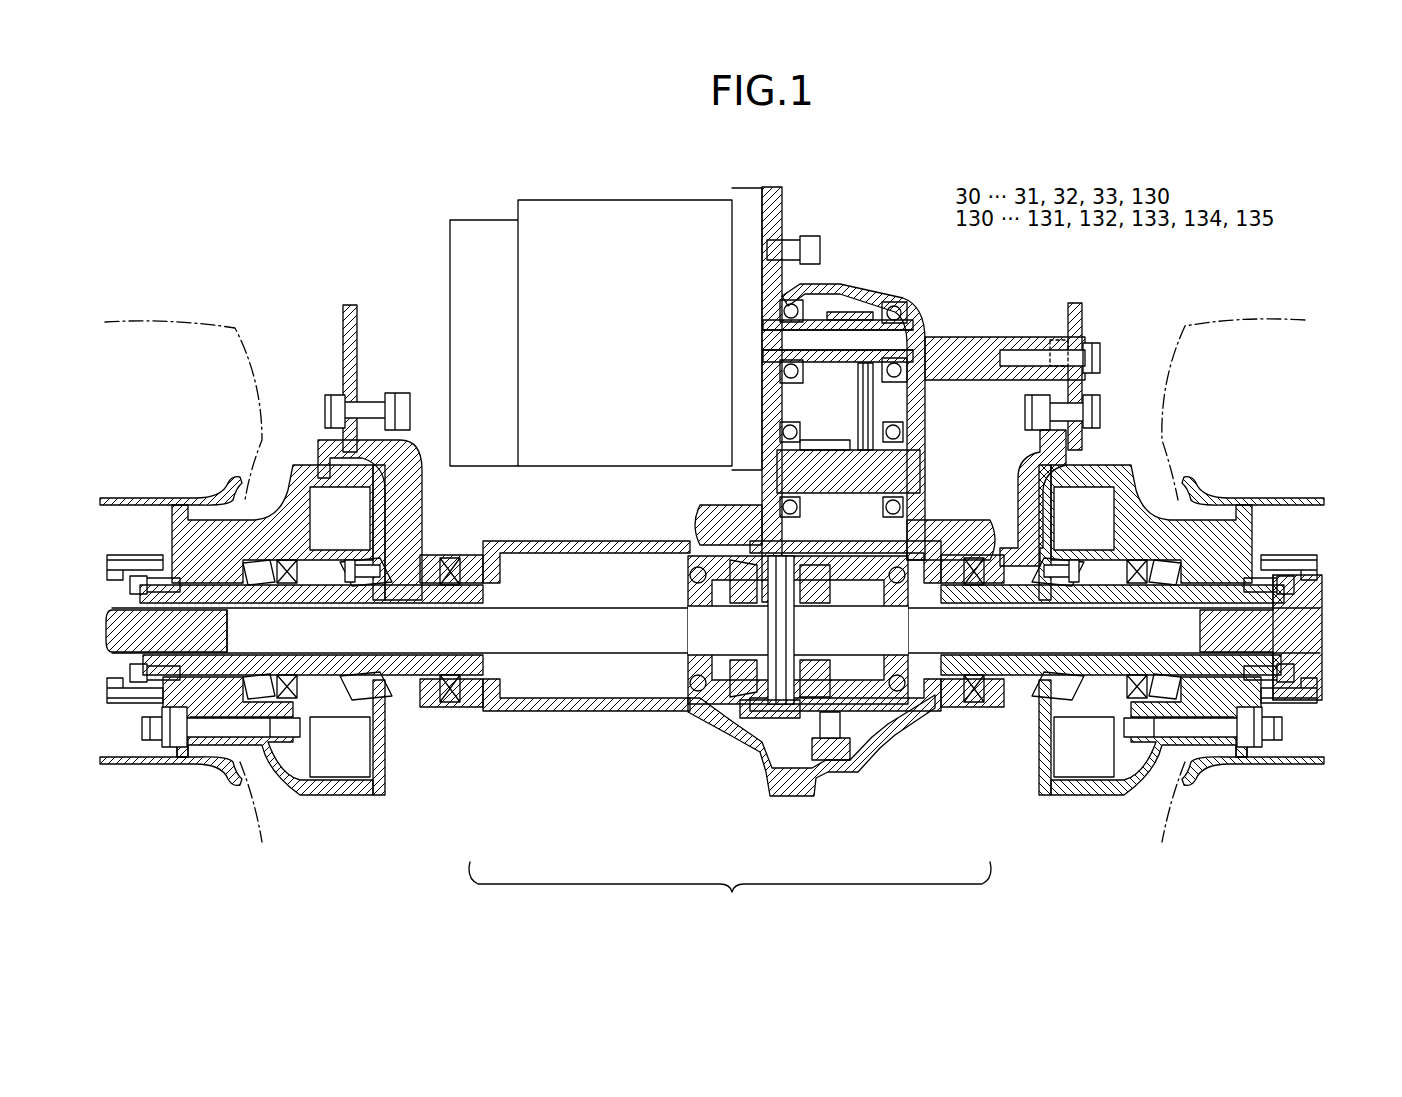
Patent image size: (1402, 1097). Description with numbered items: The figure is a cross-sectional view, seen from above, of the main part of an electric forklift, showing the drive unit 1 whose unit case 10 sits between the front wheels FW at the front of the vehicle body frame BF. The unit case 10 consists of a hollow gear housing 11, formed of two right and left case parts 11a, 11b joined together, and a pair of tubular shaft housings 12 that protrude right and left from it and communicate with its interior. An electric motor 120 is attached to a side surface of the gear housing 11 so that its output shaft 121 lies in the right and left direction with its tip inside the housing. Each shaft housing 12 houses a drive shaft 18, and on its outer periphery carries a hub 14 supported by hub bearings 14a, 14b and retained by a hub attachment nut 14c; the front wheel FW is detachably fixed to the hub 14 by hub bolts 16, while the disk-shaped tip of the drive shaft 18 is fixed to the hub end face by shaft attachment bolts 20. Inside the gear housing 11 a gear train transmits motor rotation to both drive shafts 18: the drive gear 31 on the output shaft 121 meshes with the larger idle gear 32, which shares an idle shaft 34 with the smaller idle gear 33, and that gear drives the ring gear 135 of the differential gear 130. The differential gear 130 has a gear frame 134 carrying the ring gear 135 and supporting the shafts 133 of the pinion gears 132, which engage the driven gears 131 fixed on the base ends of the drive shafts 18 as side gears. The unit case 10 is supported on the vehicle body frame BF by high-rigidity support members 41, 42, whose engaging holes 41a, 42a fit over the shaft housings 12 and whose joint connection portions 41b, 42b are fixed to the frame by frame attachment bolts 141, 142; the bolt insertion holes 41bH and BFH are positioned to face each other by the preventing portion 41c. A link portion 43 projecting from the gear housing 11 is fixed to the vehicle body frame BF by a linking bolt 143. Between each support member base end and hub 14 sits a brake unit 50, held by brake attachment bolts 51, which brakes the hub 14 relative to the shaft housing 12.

The drive unit 1 is at (868, 170).
The unit case 10 is at (730, 899).
The gear housing 11 is at (792, 821).
The case part 11a is at (808, 804).
The case part 11b is at (778, 796).
The shaft housing 12 is at (486, 740).
The hub 14 is at (252, 520).
The hub bearing 14a is at (258, 700).
The hub bearing 14b is at (165, 498).
The hub attachment nut 14c is at (160, 745).
The hub bolt 16 is at (213, 740).
The drive shaft 18 is at (442, 690).
The shaft attachment bolt 20 is at (125, 556).
The electric motor 120 is at (690, 215).
The output shaft 121 is at (832, 345).
The drive gear 31 is at (868, 340).
The idle gear 32 is at (857, 376).
The idle gear 33 is at (830, 440).
The idle shaft 34 is at (925, 472).
The support member 41 is at (1012, 488).
The engaging hole 41a is at (1018, 700).
The joint connection portion 41b is at (1080, 443).
The bolt insertion hole 41bH is at (1025, 410).
The preventing portion 41c is at (1058, 335).
The support member 42 is at (412, 485).
The engaging hole 42a is at (410, 740).
The joint connection portion 42b is at (330, 445).
The link portion 43 is at (953, 345).
The brake unit 50 is at (345, 778).
The brake attachment bolt 51 is at (345, 570).
The differential gear 130 is at (783, 669).
The driven gear 131 is at (700, 706).
The pinion gear 132 is at (750, 553).
The shaft 133 is at (775, 632).
The gear frame 134 is at (850, 745).
The ring gear 135 is at (855, 785).
The frame attachment bolt 141 is at (1105, 412).
The frame attachment bolt 142 is at (393, 395).
The linking bolt 143 is at (1092, 345).
The vehicle body frame BF is at (350, 305).
The bolt insertion hole BFH is at (1105, 392).
The front wheel FW is at (172, 324).